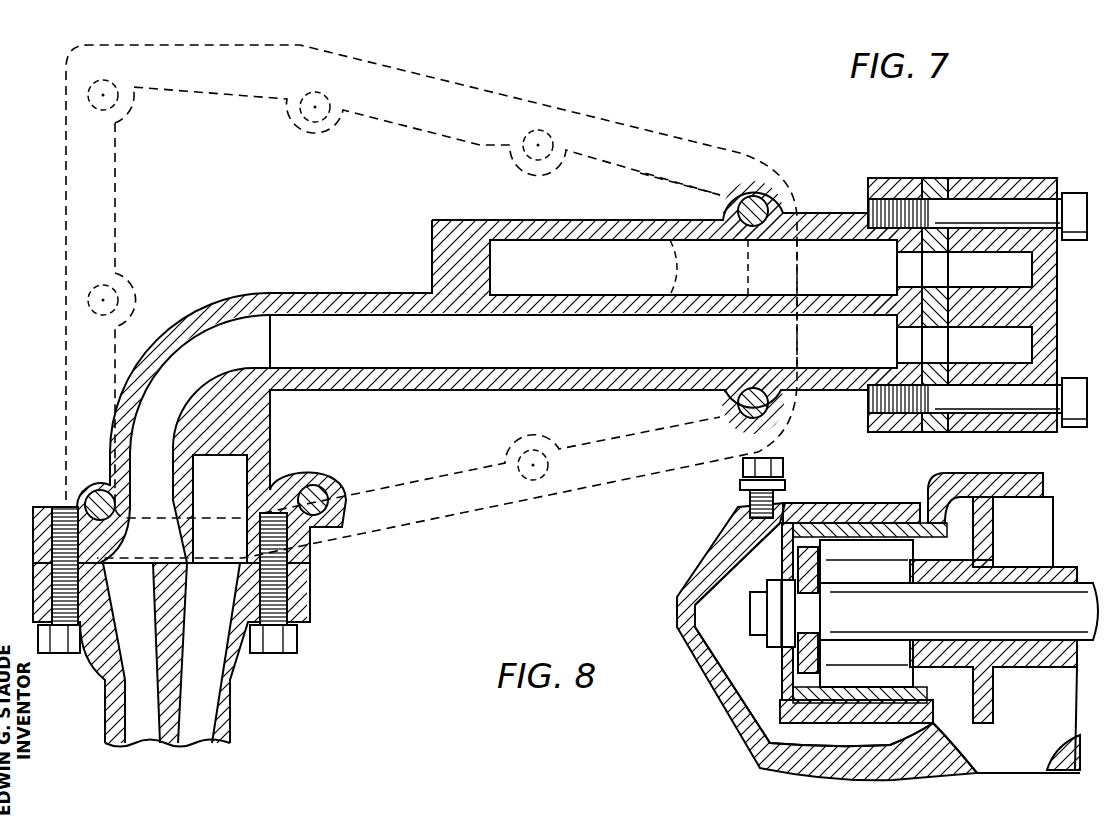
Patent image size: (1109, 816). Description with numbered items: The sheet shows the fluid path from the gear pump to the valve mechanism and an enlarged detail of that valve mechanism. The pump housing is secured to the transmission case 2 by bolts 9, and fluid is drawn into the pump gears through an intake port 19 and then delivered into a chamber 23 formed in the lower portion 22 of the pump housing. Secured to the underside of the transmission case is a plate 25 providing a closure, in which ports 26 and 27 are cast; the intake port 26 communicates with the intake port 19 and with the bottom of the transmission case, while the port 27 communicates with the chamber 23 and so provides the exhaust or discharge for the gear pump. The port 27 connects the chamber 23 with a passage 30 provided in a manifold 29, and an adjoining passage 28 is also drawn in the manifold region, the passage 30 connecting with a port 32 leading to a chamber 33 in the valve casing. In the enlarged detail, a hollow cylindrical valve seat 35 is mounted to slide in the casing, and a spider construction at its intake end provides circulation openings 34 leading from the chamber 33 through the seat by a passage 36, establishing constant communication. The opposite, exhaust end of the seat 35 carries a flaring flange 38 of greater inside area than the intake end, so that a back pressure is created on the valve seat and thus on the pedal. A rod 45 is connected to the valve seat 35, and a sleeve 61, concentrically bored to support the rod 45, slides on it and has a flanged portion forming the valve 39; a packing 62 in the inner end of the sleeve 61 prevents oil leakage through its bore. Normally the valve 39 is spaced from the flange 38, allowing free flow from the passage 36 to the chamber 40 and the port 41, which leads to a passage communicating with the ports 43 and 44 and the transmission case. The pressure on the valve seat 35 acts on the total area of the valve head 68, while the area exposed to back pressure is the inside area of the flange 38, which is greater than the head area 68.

In FIG. 7, the transmission case 2 is at (460, 513).
In FIG. 7, the bolts 9 is at (1073, 420).
In FIG. 7, the intake port 19 is at (964, 271).
In FIG. 7, the lower portion of the pump housing 22 is at (1015, 193).
In FIG. 7, the chamber 23 is at (964, 345).
In FIG. 7, the plate 25 is at (482, 158).
In FIG. 7, the intake port 26 is at (693, 304).
In FIG. 7, the port 27 is at (583, 341).
In FIG. 7, the vertical passage 28 is at (171, 546).
In FIG. 7, the manifold 29 is at (230, 697).
In FIG. 7, the passage 30 is at (89, 653).
In FIG. 7, the port 43 is at (192, 653).
In FIG. 7, the port 44 is at (220, 509).
In FIG. 8, the port 32 is at (814, 643).
In FIG. 8, the chamber 33 is at (827, 641).
In FIG. 8, the circulation openings 34 is at (807, 667).
In FIG. 8, the valve seat 35 is at (872, 530).
In FIG. 8, the passage 36 is at (866, 613).
In FIG. 8, the flaring flange 38 is at (953, 520).
In FIG. 8, the valve 39 is at (983, 525).
In FIG. 8, the chamber 40 is at (1053, 734).
In FIG. 8, the port 41 is at (980, 748).
In FIG. 8, the rod 45 is at (924, 613).
In FIG. 8, the sleeve 61 is at (1027, 657).
In FIG. 8, the packing 62 is at (923, 653).
In FIG. 8, the valve head 68 is at (800, 652).